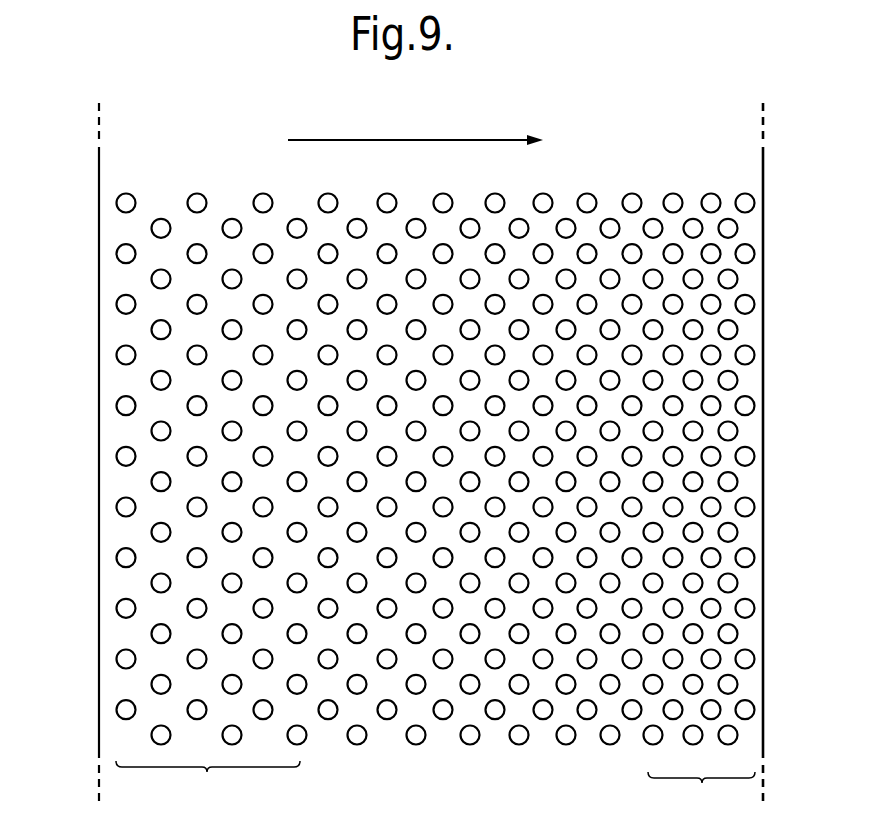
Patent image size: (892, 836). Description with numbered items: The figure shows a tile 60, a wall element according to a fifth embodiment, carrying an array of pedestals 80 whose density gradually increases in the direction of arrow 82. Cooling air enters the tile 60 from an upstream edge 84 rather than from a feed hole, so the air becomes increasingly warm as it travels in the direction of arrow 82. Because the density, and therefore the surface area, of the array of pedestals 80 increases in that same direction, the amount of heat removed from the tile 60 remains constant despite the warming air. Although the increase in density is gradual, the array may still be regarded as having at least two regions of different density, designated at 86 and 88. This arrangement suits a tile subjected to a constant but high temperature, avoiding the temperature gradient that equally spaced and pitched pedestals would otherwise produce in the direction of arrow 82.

The tile 60 is at (771, 173).
The array of pedestals 80 is at (655, 150).
The arrow 82 is at (412, 139).
The upstream edge 84 is at (98, 668).
The region 86 is at (208, 781).
The region 88 is at (701, 791).